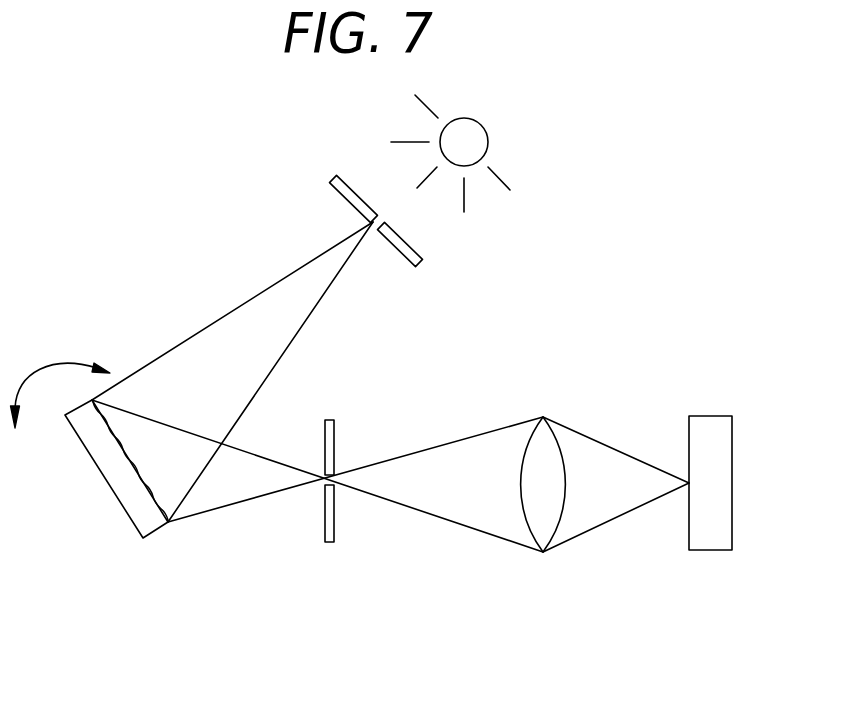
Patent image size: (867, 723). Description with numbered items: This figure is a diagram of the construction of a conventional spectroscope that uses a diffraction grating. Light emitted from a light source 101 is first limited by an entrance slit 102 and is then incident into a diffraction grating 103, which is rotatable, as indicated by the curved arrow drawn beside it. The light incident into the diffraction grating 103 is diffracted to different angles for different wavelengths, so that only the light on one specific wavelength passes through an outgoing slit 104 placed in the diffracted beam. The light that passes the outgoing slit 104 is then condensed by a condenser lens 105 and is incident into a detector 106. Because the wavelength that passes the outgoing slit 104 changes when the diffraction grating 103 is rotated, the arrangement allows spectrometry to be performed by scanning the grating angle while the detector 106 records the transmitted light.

The light source 101 is at (477, 137).
The entrance slit 102 is at (372, 222).
The diffraction grating 103 is at (142, 520).
The outgoing slit 104 is at (323, 484).
The condenser lens 105 is at (533, 517).
The detector 106 is at (708, 551).